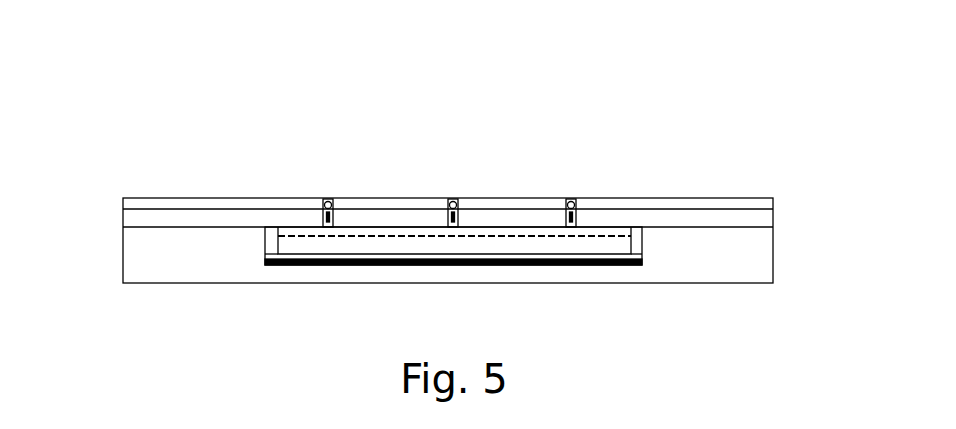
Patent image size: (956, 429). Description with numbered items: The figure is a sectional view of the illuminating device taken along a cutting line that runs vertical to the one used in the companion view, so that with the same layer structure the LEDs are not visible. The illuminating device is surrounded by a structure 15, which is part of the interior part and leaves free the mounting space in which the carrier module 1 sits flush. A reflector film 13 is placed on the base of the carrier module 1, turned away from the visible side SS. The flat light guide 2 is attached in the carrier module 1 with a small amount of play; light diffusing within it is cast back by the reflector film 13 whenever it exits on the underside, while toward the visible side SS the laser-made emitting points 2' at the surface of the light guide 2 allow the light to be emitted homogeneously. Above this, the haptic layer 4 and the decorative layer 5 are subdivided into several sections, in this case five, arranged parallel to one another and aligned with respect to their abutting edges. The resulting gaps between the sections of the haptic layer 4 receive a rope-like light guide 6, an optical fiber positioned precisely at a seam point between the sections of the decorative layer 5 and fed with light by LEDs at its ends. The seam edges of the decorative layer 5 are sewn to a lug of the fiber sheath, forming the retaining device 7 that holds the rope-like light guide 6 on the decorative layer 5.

The carrier module 1 is at (258, 237).
The flat light guide 2 is at (454, 195).
The emitting points 2' is at (451, 201).
The haptic layer 4 is at (680, 213).
The decorative layer 5 is at (642, 195).
The rope-like light guide 6 is at (331, 195).
The retaining device 7 is at (329, 233).
The reflector film 13 is at (605, 276).
The structure 15 is at (749, 233).
The visible side SS is at (539, 178).